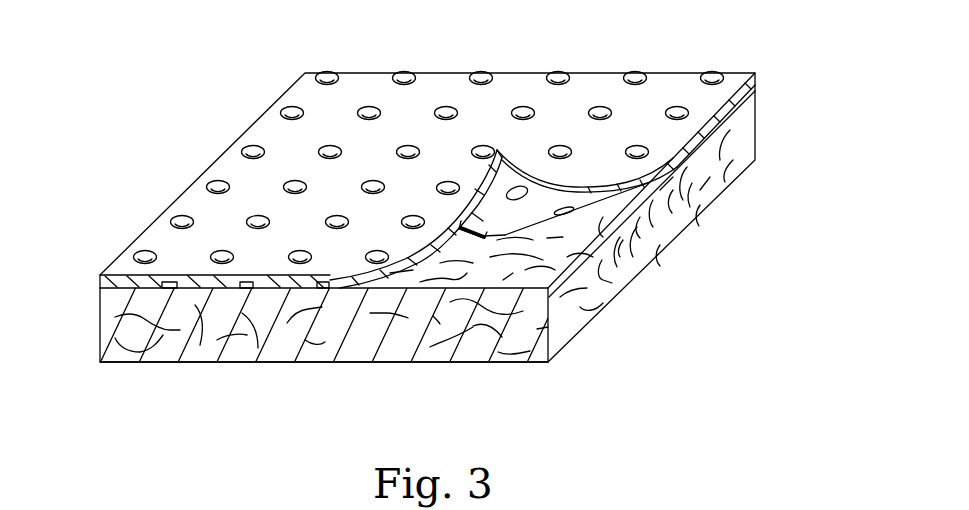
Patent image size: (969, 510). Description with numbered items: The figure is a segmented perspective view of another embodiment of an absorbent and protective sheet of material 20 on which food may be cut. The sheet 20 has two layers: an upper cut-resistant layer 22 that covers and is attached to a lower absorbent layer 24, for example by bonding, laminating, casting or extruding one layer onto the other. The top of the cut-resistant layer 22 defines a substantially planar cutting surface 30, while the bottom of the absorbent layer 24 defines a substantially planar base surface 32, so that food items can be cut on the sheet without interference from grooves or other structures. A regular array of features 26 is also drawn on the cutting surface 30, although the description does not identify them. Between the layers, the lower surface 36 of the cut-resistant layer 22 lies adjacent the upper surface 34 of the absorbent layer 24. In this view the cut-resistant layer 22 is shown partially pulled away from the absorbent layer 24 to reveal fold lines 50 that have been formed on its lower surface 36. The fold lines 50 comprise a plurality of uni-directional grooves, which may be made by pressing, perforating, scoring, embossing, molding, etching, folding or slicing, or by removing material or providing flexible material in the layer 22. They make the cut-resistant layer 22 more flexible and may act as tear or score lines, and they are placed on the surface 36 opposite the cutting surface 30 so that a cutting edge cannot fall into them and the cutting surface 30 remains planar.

The absorbent and protective sheet of material 20 is at (796, 0).
The cut-resistant layer 22 is at (100, 277).
The absorbent layer 24 is at (537, 328).
The holes 26 is at (326, 79).
The cutting surface 30 is at (160, 237).
The base surface 32 is at (313, 362).
The upper surface of the absorbent layer 34 is at (603, 255).
The lower surface of the cut-resistant layer 36 is at (513, 213).
The fold lines 50 is at (172, 288).